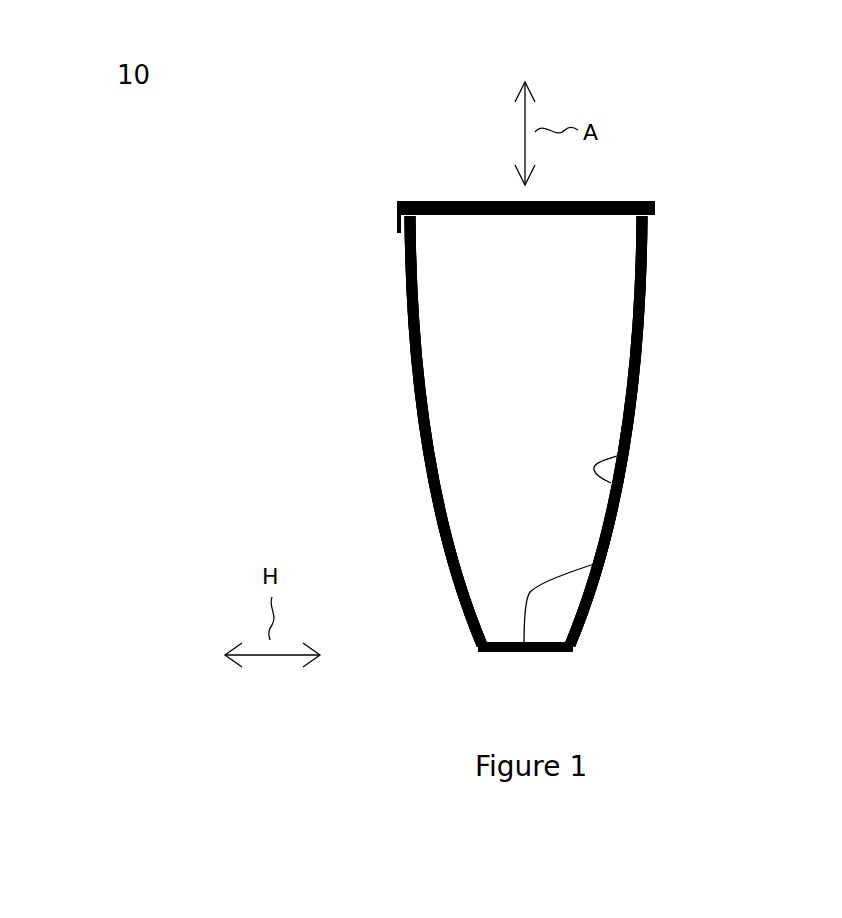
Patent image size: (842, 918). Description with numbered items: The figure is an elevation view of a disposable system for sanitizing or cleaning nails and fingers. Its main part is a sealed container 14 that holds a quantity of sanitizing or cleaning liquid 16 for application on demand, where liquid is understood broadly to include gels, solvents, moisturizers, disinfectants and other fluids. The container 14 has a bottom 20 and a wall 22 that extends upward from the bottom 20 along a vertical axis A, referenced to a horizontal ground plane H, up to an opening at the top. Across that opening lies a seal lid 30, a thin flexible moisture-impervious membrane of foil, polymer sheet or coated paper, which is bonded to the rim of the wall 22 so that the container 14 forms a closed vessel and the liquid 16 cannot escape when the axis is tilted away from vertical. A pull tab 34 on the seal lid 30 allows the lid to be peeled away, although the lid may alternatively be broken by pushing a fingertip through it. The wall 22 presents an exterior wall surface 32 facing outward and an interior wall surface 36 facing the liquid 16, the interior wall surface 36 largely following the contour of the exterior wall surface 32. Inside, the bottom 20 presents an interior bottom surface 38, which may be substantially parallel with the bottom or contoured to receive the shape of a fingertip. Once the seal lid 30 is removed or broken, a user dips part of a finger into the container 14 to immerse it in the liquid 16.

The sealed container 14 is at (680, 262).
The sanitizing and/or cleaning liquid 16 is at (526, 430).
The bottom 20 is at (494, 655).
The wall 22 is at (637, 352).
The seal lid 30 is at (655, 200).
The exterior wall surface 32 is at (412, 382).
The pull tab 34 is at (395, 223).
The interior wall surface 36 is at (620, 455).
The interior bottom surface 38 is at (600, 562).